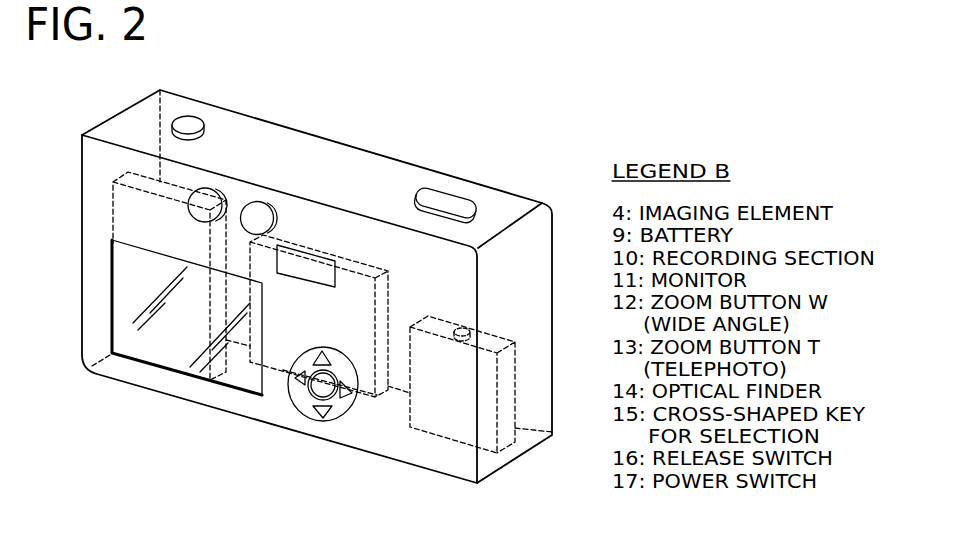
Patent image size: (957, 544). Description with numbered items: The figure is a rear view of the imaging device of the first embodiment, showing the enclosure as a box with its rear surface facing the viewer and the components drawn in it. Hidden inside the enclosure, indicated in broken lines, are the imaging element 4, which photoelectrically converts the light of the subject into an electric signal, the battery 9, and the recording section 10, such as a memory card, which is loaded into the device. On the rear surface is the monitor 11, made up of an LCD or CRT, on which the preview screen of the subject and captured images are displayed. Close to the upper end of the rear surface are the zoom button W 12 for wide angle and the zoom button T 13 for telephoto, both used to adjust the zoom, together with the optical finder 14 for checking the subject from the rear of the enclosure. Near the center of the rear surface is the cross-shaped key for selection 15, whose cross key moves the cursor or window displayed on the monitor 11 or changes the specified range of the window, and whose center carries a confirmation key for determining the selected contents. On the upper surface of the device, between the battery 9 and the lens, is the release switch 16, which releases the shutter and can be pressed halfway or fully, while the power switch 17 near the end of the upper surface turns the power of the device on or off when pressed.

The imaging element 4 is at (367, 385).
The battery 9 is at (490, 380).
The recording section 10 is at (127, 202).
The monitor 11 is at (133, 342).
The zoom button W 12 is at (207, 192).
The zoom button T 13 is at (257, 214).
The optical finder 14 is at (310, 258).
The cross-shaped key for selection 15 is at (300, 397).
The release switch 16 is at (445, 202).
The power switch 17 is at (190, 122).